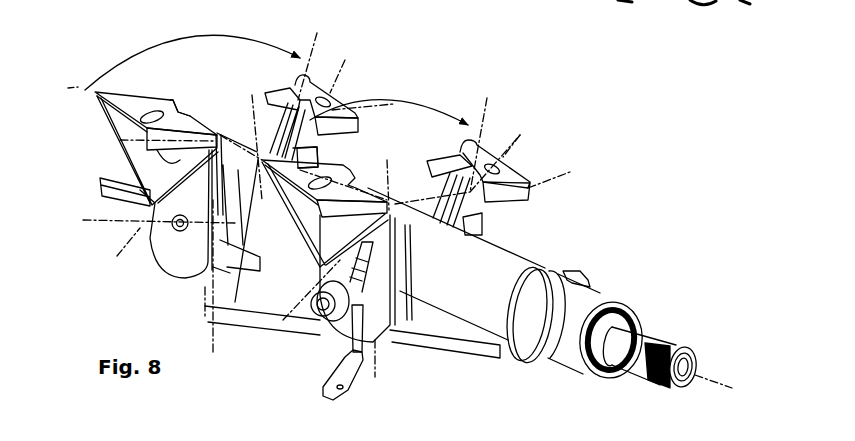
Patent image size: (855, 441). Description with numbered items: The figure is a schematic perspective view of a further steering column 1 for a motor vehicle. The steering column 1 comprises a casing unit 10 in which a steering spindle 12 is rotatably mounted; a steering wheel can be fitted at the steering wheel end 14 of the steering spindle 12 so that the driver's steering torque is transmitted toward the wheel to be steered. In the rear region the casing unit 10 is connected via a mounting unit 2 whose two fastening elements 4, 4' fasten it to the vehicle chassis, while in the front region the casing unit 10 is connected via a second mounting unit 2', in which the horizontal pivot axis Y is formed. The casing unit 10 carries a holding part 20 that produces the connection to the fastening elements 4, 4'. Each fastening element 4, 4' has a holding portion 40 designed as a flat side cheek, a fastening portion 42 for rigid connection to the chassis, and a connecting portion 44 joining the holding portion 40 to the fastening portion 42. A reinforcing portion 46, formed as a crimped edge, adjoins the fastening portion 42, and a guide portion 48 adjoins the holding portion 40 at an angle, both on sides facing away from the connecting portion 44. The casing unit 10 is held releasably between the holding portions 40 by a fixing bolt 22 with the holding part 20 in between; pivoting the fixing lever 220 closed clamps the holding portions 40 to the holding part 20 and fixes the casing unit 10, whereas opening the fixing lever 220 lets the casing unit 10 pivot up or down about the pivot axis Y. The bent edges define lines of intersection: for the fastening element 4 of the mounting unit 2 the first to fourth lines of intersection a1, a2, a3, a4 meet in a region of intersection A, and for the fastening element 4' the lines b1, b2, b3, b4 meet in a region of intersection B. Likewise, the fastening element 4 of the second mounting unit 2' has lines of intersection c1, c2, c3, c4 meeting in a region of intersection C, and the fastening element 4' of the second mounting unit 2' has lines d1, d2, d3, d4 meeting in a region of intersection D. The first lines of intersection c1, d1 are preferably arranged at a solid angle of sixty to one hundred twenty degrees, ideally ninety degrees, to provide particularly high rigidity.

The steering column 1 is at (663, 135).
The mounting unit 2 is at (620, 85).
The second mounting unit 2' is at (96, 276).
The fastening element 4 is at (218, 200).
The fastening element 4' is at (459, 128).
The casing unit 10 is at (508, 263).
The steering spindle 12 is at (645, 333).
The steering wheel end 14 is at (677, 347).
The holding part 20 is at (415, 325).
The fixing bolt 22 is at (322, 315).
The holding portion 40 is at (193, 253).
The fastening portion 42 is at (163, 108).
The connecting portion 44 is at (155, 181).
The reinforcing portion 46 is at (165, 148).
The guide portion 48 is at (212, 288).
The fixing lever 220 is at (350, 373).
The region of intersection A is at (435, 322).
The region of intersection B is at (470, 170).
The region of intersection C is at (217, 133).
The region of intersection D is at (298, 110).
The horizontal pivot axis Y is at (152, 220).
The first line of intersection a1 is at (244, 241).
The second line of intersection a2 is at (283, 320).
The third line of intersection a3 is at (395, 190).
The fourth line of intersection a4 is at (373, 350).
The first line of intersection b1 is at (470, 118).
The second line of intersection b2 is at (520, 135).
The third line of intersection b3 is at (547, 182).
The fourth line of intersection b4 is at (485, 115).
The first line of intersection c1 is at (90, 87).
The second line of intersection c2 is at (120, 250).
The third line of intersection c3 is at (251, 138).
The fourth line of intersection c4 is at (200, 313).
The first line of intersection d1 is at (300, 53).
The second line of intersection d2 is at (345, 68).
The third line of intersection d3 is at (392, 116).
The fourth line of intersection d4 is at (320, 43).